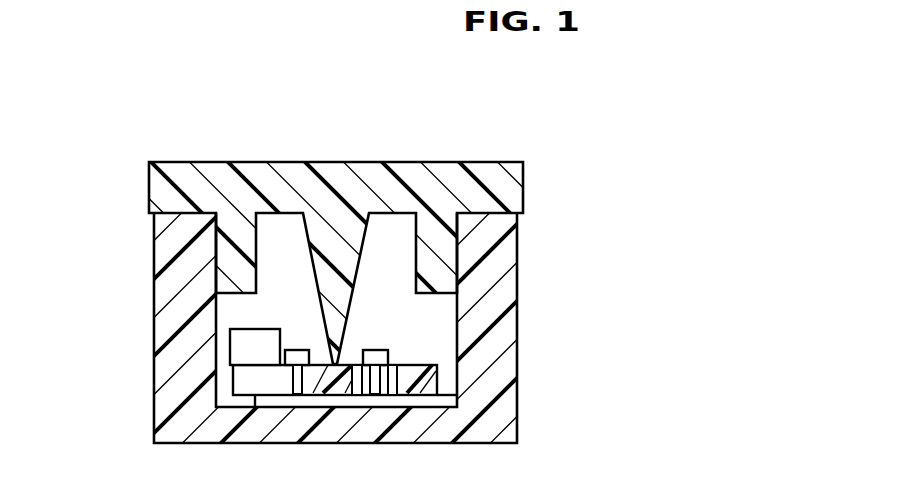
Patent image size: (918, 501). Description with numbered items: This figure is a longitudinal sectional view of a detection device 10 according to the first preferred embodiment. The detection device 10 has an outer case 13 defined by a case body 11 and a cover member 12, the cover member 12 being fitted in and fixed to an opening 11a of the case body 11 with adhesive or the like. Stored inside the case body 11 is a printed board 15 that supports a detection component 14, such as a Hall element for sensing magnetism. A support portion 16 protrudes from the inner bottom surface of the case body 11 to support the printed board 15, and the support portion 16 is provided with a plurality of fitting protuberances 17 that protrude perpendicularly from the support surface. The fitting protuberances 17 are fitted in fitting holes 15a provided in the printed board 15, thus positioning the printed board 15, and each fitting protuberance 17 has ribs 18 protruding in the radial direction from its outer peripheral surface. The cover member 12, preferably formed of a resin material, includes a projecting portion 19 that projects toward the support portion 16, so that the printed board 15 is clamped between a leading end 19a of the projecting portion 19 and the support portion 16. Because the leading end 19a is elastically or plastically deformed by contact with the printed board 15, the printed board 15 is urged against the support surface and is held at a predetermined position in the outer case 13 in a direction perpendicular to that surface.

The detection device 10 is at (133, 108).
The case body 11 is at (500, 373).
The opening 11a is at (456, 258).
The cover member 12 is at (497, 186).
The outer case 13 is at (138, 407).
The detection component 14 is at (230, 340).
The printed board 15 is at (440, 387).
The fitting holes 15a is at (408, 392).
The support portion 16 is at (282, 400).
The fitting protuberances 17 is at (298, 348).
The ribs 18 is at (290, 386).
The projecting portion 19 is at (347, 255).
The leading end 19a is at (330, 342).